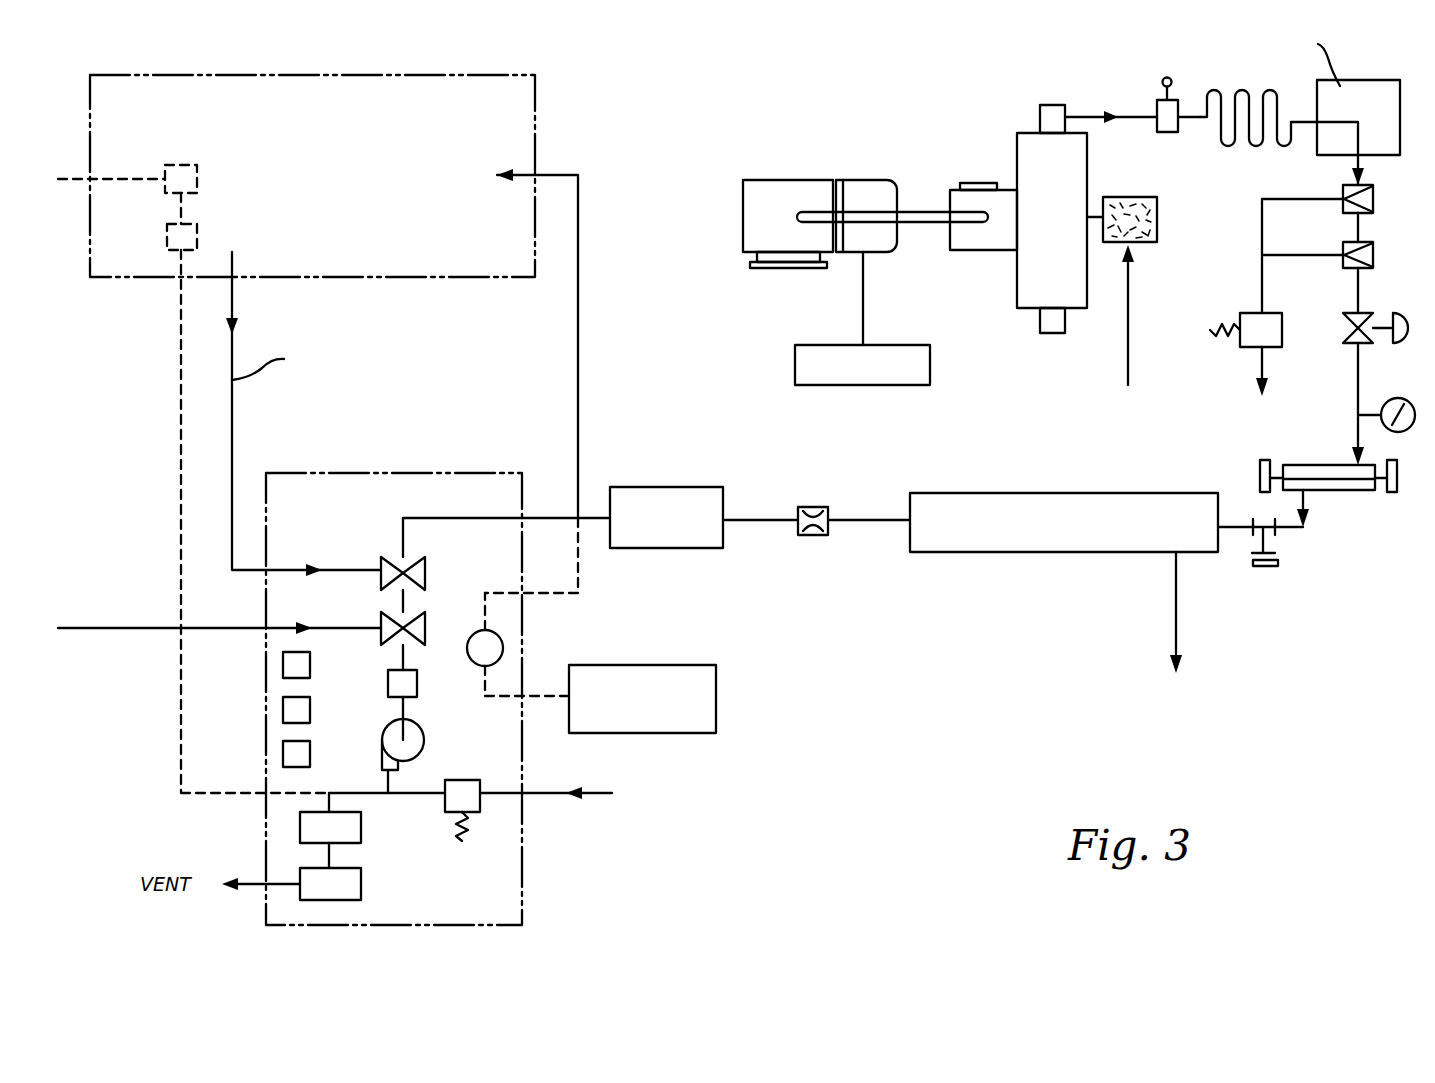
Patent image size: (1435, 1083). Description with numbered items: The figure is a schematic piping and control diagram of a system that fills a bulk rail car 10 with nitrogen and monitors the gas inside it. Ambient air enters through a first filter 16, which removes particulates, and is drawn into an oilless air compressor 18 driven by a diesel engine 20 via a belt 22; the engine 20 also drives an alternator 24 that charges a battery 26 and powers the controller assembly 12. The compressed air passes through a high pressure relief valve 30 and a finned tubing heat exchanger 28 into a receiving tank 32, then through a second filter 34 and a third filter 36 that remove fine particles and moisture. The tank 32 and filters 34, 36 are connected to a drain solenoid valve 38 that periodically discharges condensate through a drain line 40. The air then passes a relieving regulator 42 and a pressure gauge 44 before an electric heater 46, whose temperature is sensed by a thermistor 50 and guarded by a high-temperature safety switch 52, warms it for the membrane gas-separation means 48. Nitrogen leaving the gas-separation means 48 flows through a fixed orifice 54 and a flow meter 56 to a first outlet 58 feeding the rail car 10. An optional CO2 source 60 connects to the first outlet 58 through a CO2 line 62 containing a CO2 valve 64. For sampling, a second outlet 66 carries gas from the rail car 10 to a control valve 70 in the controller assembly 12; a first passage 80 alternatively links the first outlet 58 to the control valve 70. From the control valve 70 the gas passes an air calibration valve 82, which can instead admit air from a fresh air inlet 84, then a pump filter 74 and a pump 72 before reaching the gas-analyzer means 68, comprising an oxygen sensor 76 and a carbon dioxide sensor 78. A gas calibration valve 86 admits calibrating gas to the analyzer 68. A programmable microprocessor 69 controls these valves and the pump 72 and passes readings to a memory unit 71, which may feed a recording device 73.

The rail car 10 is at (407, 76).
The controller assembly 12 is at (455, 454).
The first filter 16 is at (1142, 200).
The air compressor 18 is at (1017, 136).
The diesel engine 20 is at (770, 192).
The belt 22 is at (920, 212).
The alternator 24 is at (893, 253).
The battery 26 is at (858, 385).
The heat exchanger 28 is at (1216, 94).
The high pressure relief valve 30 is at (1157, 110).
The receiving tank 32 is at (1368, 88).
The second filter 34 is at (1373, 190).
The third filter 36 is at (1373, 246).
The drain solenoid valve 38 is at (1282, 315).
The drain line 40 is at (1258, 366).
The relieving regulator 42 is at (1406, 306).
The pressure gauge 44 is at (1400, 392).
The electric heater 46 is at (1340, 486).
The gas-separation means 48 is at (1000, 493).
The thermistor 50 is at (1258, 478).
The high-temperature safety switch 52 is at (1270, 568).
The fixed orifice 54 is at (815, 507).
The flow meter 56 is at (667, 487).
The first outlet 58 is at (578, 325).
The CO2 source 60 is at (700, 665).
The CO2 line 62 is at (581, 593).
The CO2 valve 64 is at (503, 646).
The second outlet 66 is at (232, 294).
The gas-analyzer means 68 is at (218, 173).
The programmable microprocessor 69 is at (310, 665).
The control valve 70 is at (388, 562).
The memory unit 71 is at (310, 707).
The pump 72 is at (424, 740).
The recording device 73 is at (310, 750).
The pump filter 74 is at (417, 683).
The oxygen sensor 76 is at (197, 230).
The carbon dioxide sensor 78 is at (170, 165).
The first passage 80 is at (462, 518).
The air calibration valve 82 is at (410, 618).
The fresh air inlet 84 is at (284, 628).
The gas calibration valve 86 is at (480, 783).